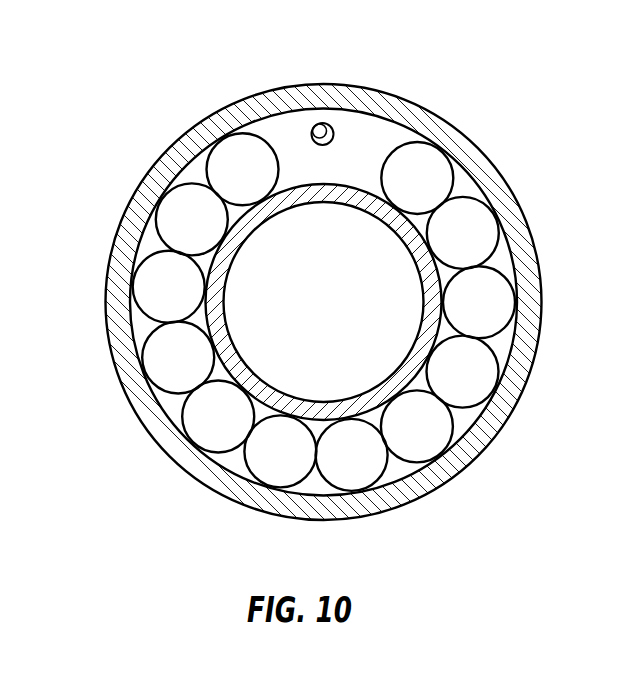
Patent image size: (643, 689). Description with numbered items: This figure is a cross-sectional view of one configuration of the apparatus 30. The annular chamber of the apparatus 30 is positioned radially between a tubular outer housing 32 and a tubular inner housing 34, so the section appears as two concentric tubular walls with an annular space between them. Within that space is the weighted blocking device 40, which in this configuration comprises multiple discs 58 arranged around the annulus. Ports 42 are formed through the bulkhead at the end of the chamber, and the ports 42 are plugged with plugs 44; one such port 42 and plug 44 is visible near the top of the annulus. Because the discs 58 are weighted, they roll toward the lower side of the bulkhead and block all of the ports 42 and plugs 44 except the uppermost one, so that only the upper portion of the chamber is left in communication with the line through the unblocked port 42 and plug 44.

The apparatus 30 is at (326, 284).
The tubular outer housing 32 is at (128, 402).
The tubular inner housing 34 is at (234, 338).
The weighted blocking device 40 is at (410, 302).
The port 42 is at (334, 128).
The plug 44 is at (305, 88).
The disc 58 is at (207, 167).